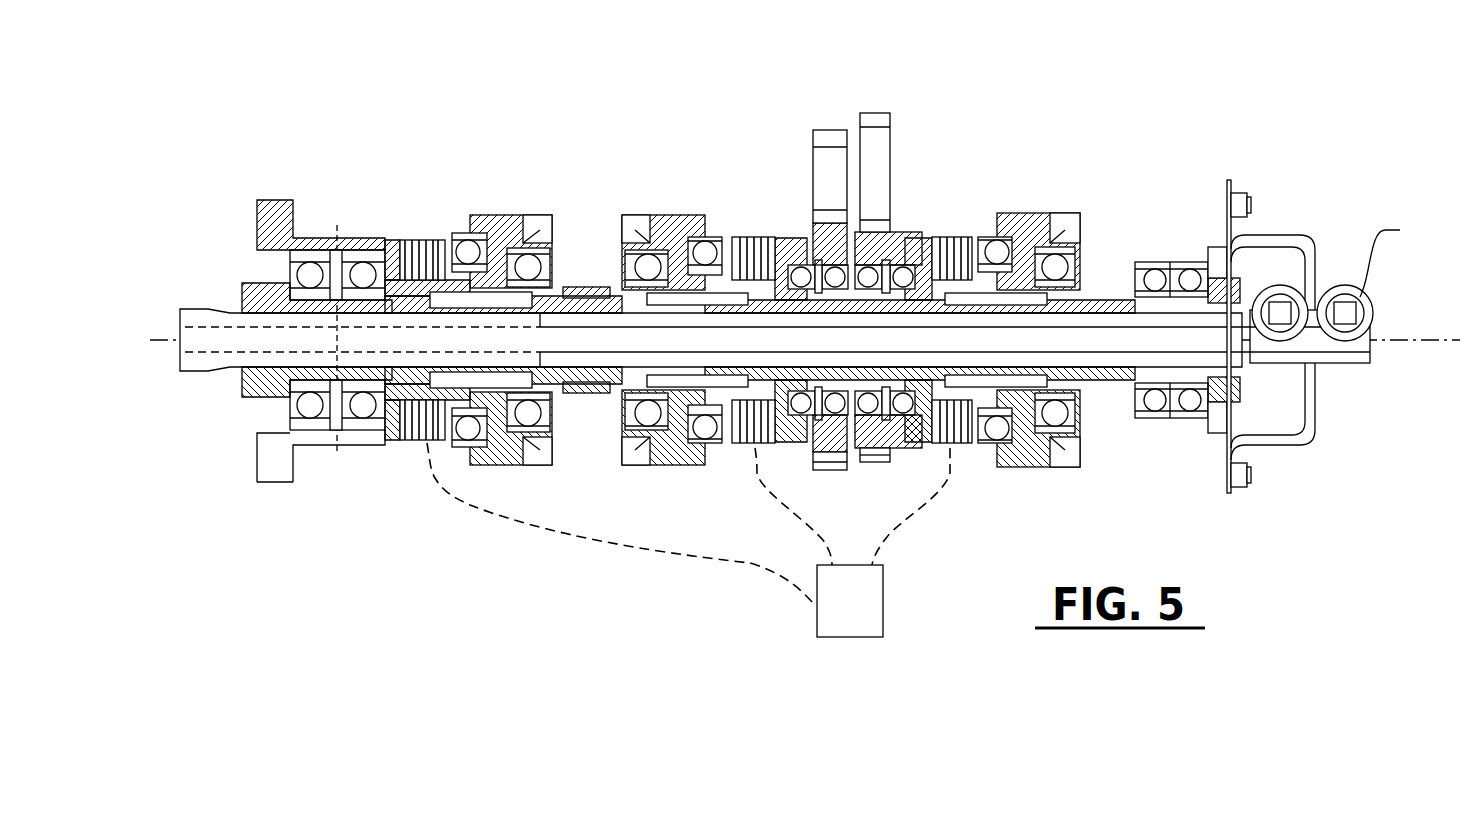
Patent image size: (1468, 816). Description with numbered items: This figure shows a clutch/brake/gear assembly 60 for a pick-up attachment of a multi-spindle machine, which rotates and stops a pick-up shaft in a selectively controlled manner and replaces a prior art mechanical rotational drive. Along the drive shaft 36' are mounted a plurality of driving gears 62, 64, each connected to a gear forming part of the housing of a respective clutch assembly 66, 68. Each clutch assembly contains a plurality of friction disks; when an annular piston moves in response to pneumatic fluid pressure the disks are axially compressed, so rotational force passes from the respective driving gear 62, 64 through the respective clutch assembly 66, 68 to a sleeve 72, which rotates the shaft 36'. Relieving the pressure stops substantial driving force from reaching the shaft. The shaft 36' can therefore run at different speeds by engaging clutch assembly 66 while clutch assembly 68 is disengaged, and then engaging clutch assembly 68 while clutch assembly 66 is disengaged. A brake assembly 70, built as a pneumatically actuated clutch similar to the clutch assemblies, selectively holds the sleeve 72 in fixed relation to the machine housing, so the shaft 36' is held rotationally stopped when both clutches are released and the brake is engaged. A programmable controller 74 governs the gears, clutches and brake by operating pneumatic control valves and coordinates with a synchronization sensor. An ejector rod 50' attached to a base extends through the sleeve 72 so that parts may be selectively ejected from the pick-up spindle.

The shaft 36' is at (321, 308).
The ejector rod 50' is at (1313, 311).
The clutch/brake/gear assembly 60 is at (844, 236).
The driving gear 62 is at (815, 163).
The driving gear 64 is at (892, 153).
The clutch assembly 66 is at (767, 205).
The clutch assembly 68 is at (953, 220).
The brake assembly 70 is at (413, 205).
The sleeve 72 is at (268, 297).
The controller 74 is at (883, 598).